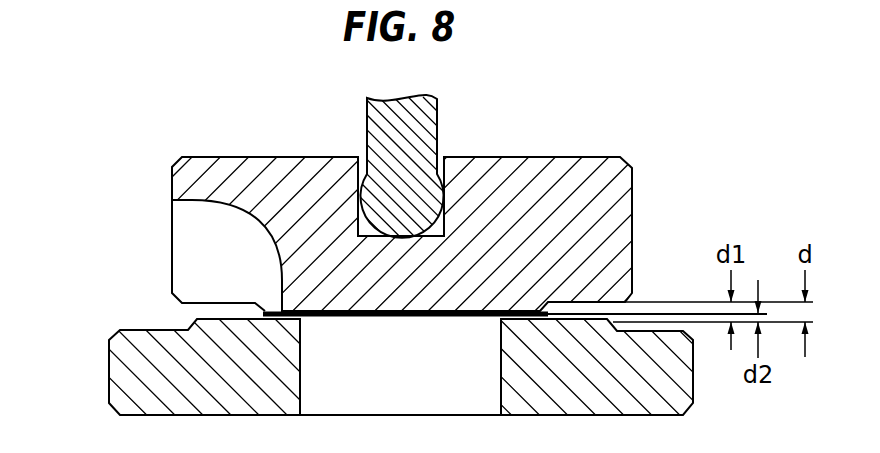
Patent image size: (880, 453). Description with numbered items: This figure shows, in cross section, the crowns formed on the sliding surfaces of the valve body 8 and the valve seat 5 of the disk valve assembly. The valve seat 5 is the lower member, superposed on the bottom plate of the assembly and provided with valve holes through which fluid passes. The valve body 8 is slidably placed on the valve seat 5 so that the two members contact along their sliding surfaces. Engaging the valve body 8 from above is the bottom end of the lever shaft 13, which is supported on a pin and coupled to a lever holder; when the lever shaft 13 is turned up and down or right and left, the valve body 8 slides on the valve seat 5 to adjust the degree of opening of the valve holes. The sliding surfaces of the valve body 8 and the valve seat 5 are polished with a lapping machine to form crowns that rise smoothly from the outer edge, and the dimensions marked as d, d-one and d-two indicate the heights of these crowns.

The lever shaft 13 is at (392, 132).
The valve body 8 is at (535, 204).
The valve seat 5 is at (142, 365).